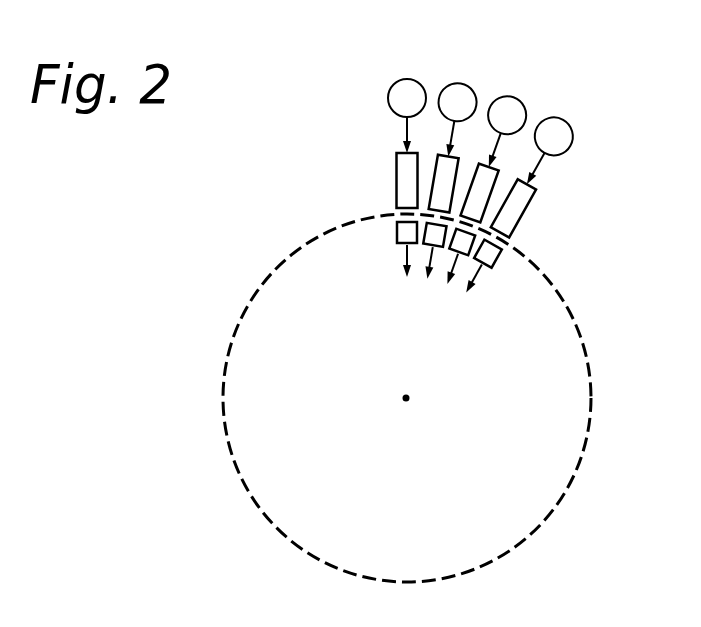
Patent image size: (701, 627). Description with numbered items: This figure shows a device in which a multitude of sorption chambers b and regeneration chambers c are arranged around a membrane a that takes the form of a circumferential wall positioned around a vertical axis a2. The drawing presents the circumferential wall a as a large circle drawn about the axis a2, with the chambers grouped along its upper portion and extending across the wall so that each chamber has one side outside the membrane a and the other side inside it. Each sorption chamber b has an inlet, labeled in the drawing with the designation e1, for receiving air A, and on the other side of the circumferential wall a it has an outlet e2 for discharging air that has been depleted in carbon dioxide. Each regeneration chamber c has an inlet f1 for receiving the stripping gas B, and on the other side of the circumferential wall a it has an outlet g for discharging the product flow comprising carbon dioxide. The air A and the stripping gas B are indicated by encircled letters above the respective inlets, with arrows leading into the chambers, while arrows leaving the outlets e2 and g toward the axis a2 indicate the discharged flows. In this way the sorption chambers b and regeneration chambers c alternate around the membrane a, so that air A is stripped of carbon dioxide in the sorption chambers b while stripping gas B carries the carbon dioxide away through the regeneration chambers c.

The membrane a is at (224, 372).
The vertical axis a2 is at (406, 398).
The sorption chamber b is at (403, 232).
The regeneration chamber c is at (443, 243).
The sensor unit e1 is at (405, 153).
The outlet e2 is at (398, 246).
The inlet f1 is at (441, 157).
The outlet g is at (419, 246).
The air A is at (459, 126).
The stripping gas B is at (505, 136).